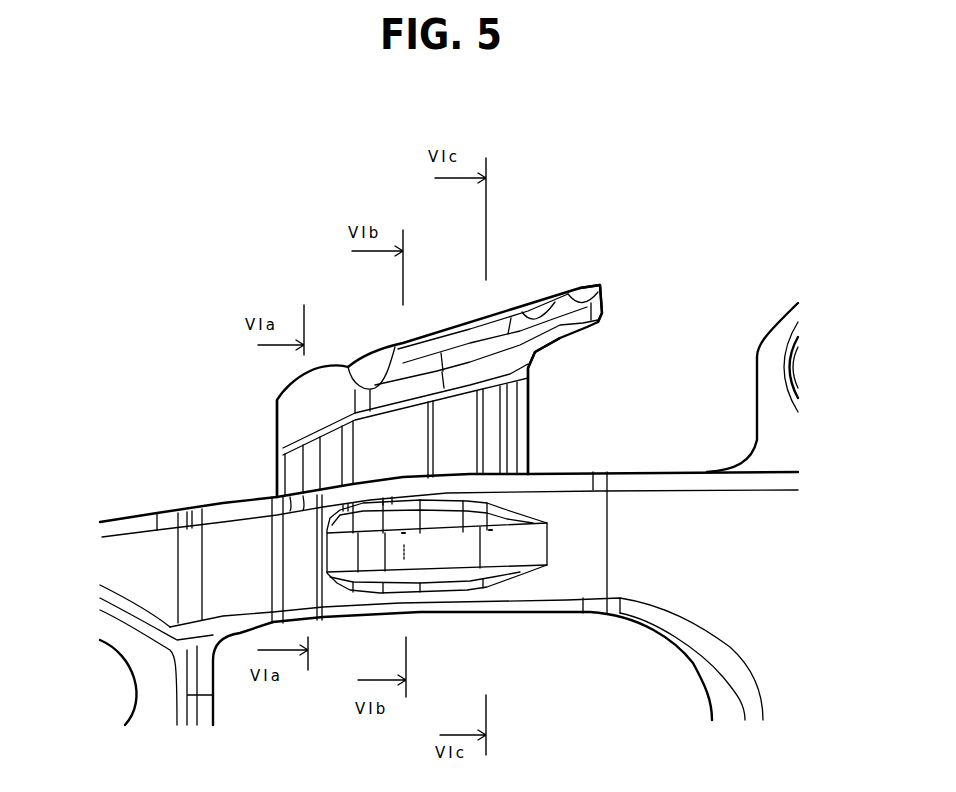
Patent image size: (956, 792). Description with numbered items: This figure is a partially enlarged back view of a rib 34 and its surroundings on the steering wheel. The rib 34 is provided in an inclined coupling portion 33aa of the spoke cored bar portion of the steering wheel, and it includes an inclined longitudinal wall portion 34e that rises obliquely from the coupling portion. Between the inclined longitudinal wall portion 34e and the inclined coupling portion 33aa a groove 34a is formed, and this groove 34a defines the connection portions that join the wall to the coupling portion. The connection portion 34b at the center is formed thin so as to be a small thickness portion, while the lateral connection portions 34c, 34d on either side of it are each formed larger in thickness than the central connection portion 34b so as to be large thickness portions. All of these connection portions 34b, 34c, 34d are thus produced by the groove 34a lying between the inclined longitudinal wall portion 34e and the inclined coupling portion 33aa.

The rib 34 is at (425, 342).
The groove 34a is at (276, 478).
The connection portion 34b is at (400, 430).
The lateral connection portion 34c is at (283, 470).
The lateral connection portion 34d is at (528, 425).
The inclined longitudinal wall portion 34e is at (613, 303).
The inclined coupling portion 33aa is at (573, 472).